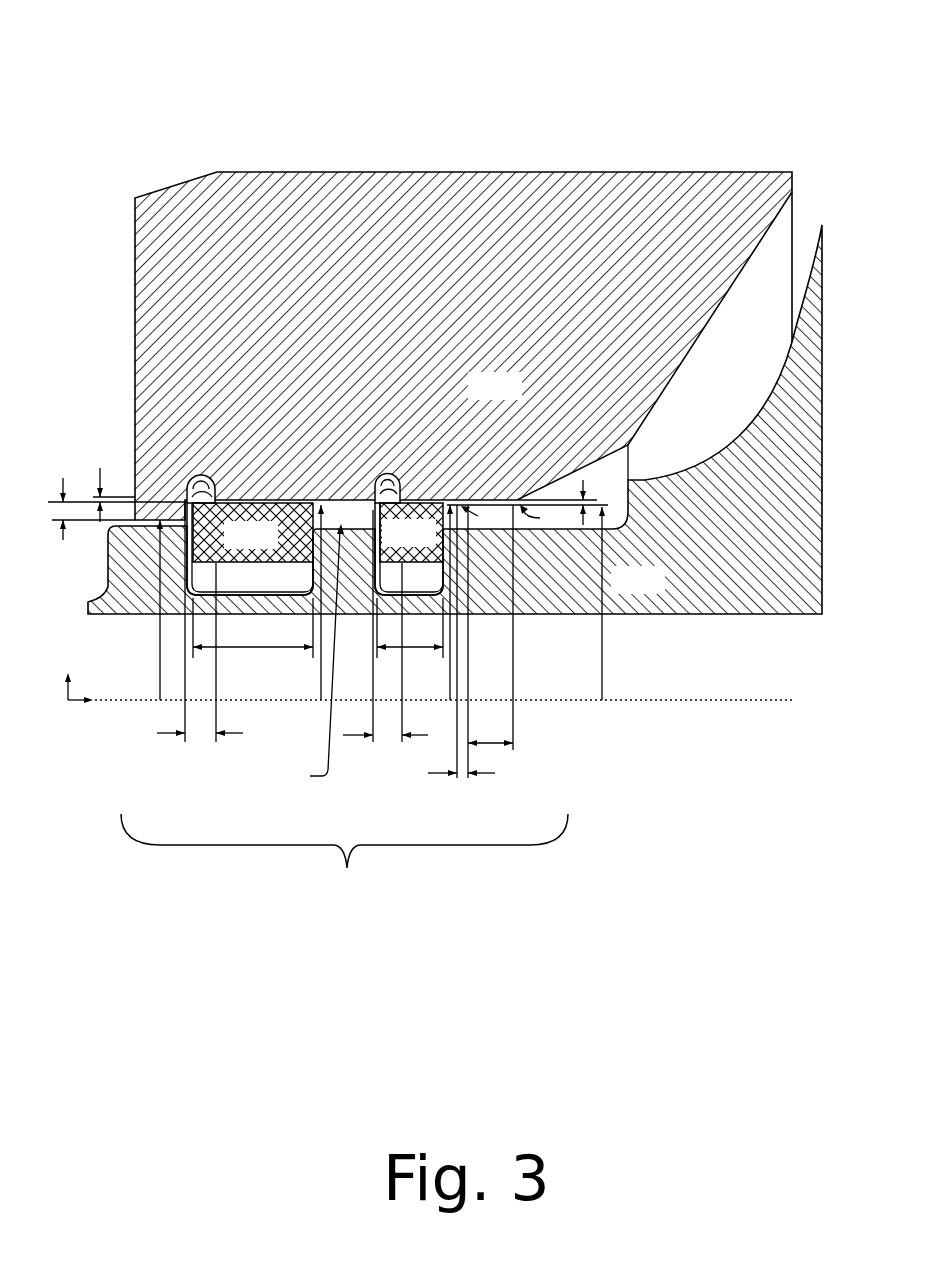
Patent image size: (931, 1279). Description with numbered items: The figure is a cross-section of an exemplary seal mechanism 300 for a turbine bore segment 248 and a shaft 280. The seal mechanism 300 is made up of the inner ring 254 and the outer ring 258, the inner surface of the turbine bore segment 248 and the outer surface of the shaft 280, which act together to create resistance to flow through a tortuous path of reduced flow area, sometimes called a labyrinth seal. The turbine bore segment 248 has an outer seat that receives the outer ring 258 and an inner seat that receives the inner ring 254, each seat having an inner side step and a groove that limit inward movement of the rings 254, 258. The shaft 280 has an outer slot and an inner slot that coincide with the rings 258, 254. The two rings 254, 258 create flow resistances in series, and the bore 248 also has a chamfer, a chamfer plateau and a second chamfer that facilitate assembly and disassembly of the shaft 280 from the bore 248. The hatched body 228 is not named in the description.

The seal mechanism 300 is at (245, 28).
The rotating component 228 is at (517, 397).
The inner ring 254 is at (272, 547).
The outer ring 258 is at (432, 545).
The shaft 280 is at (660, 592).
The turbine bore segment 248 is at (592, 735).